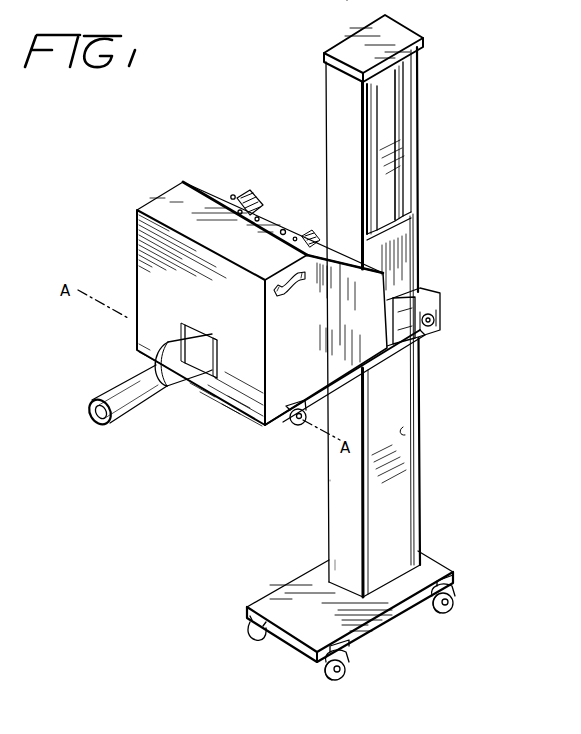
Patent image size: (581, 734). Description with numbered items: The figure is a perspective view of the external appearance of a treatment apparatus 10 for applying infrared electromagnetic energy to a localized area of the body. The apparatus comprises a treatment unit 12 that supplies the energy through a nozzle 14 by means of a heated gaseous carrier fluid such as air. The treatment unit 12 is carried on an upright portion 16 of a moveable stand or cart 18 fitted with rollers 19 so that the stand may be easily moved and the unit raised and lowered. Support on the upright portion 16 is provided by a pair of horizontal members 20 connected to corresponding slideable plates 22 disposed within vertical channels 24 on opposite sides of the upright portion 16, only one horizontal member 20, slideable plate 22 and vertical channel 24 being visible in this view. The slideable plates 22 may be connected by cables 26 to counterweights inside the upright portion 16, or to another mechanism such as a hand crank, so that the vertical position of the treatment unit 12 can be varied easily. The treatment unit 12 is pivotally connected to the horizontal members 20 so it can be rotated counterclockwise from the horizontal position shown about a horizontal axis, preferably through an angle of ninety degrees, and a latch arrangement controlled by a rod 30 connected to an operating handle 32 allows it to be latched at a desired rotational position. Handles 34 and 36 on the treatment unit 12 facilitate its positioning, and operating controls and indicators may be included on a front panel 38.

The treatment apparatus 10 is at (302, 508).
The treatment unit 12 is at (136, 240).
The nozzle 14 is at (148, 393).
The upright portion 16 is at (426, 502).
The moveable stand or cart 18 is at (392, 621).
The rollers 19 is at (453, 590).
The horizontal members 20 is at (392, 367).
The slideable plates 22 is at (403, 257).
The vertical channels 24 is at (405, 434).
The cables 26 is at (377, 118).
The rod 30 is at (407, 343).
The operating handle 32 is at (435, 325).
The handle 34 is at (288, 296).
The handle 36 is at (420, 290).
The front panel 38 is at (221, 184).